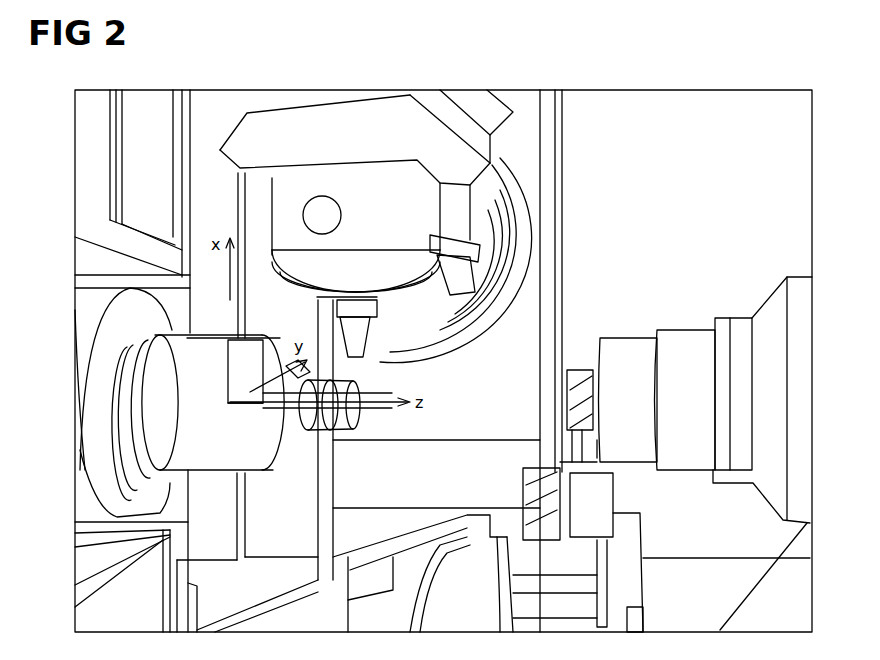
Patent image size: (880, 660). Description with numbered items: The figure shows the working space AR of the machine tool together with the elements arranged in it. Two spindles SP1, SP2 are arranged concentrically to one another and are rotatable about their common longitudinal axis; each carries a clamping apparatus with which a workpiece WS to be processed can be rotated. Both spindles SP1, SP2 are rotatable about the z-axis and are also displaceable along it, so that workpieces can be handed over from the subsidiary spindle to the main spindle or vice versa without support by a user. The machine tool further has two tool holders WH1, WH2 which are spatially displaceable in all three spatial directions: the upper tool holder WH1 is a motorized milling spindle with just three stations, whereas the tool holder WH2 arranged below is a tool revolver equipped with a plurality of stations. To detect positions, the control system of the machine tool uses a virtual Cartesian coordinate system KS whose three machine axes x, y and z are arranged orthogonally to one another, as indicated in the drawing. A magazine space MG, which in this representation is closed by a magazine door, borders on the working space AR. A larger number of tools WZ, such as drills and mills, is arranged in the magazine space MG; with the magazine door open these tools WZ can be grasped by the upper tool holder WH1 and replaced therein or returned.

The magazine space MG is at (171, 361).
The spindle SP1 is at (223, 460).
The spindle SP2 is at (685, 340).
The virtual Cartesian coordinate system KS is at (228, 395).
The workpiece WS is at (338, 418).
The tools WZ is at (373, 346).
The upper tool holder WH1 is at (383, 210).
The tool holder WH2 is at (487, 557).
The working space AR is at (677, 120).